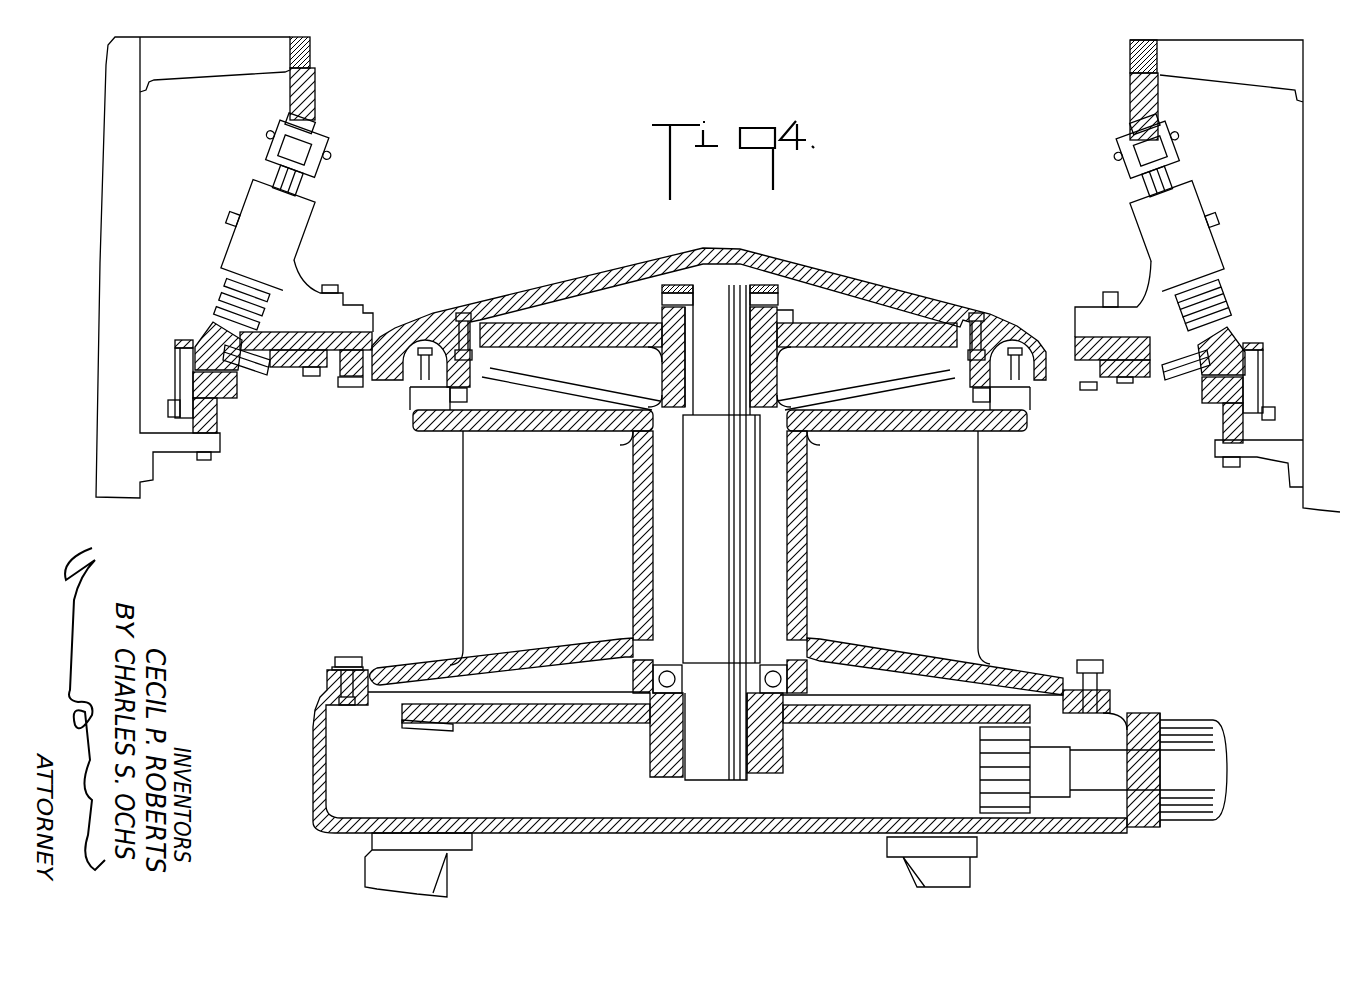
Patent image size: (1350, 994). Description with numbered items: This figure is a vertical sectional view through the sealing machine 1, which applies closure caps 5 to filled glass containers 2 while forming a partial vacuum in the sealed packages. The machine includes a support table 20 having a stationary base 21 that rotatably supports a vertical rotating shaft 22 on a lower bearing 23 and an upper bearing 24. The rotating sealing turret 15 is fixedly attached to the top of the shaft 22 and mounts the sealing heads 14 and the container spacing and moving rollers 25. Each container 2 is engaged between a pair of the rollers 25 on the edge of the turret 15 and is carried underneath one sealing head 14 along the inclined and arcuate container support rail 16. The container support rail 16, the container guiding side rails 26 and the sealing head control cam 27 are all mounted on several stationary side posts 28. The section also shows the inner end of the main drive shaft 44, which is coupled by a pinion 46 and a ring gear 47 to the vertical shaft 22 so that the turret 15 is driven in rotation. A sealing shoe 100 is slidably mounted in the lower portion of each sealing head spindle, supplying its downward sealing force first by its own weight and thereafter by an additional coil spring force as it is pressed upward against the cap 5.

The sealing machine 1 is at (883, 273).
The glass container 2 is at (210, 330).
The closure cap 5 is at (1220, 320).
The sealing head 14 is at (1148, 230).
The sealing turret 15 is at (937, 307).
The container support rail 16 is at (1213, 403).
The support table 20 is at (907, 544).
The stationary base 21 is at (1053, 667).
The vertical rotating shaft 22 is at (695, 580).
The lower bearing 23 is at (810, 640).
The upper bearing 24 is at (993, 373).
The container spacing roller 25 is at (263, 370).
The container guiding side rail 26 is at (175, 340).
The sealing head control cam 27 is at (312, 110).
The stationary side post 28 is at (132, 195).
The main drive shaft 44 is at (1097, 757).
The pinion 46 is at (983, 782).
The ring gear 47 is at (983, 728).
The sealing shoe 100 is at (1223, 310).